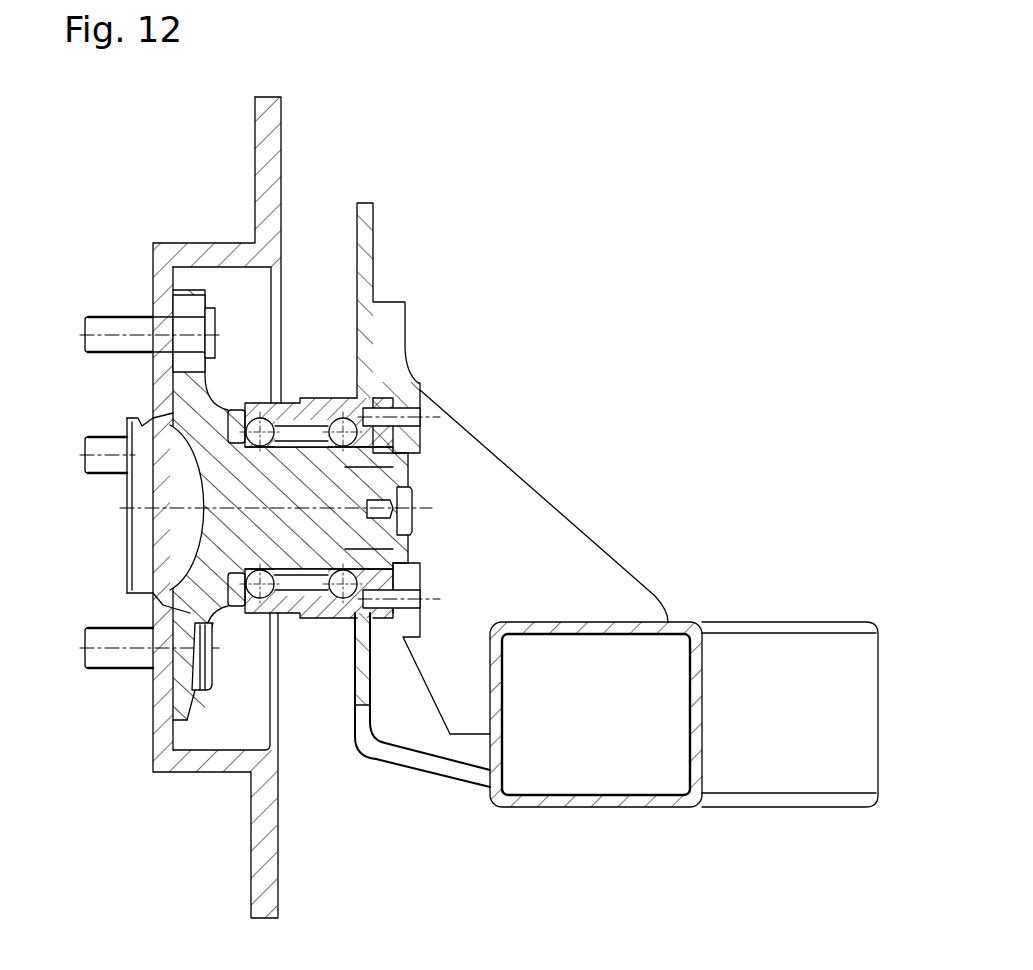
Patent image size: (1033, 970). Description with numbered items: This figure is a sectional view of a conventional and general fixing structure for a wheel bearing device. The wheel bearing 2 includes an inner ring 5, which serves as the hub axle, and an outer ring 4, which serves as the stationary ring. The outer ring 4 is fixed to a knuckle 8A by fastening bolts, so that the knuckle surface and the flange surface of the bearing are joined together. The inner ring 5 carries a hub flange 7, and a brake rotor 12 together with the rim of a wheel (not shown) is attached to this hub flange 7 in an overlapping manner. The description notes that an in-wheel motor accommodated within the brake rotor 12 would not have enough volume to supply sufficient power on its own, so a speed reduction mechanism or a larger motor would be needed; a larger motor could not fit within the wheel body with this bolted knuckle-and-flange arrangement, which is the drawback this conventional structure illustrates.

The brake rotor 12 is at (262, 162).
The wheel bearing 2 is at (56, 533).
The inner ring 5 is at (243, 508).
The hub flange 7 is at (185, 370).
The outer ring 4 is at (220, 607).
The knuckle 8A is at (478, 468).